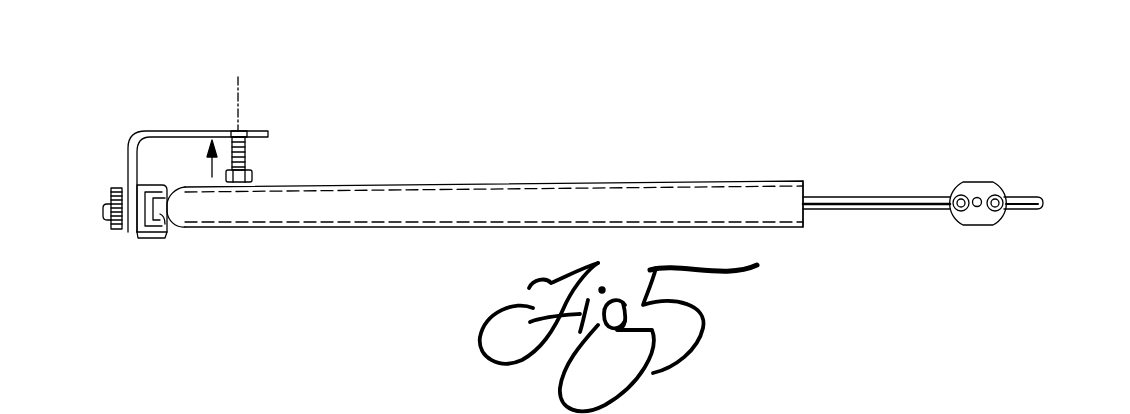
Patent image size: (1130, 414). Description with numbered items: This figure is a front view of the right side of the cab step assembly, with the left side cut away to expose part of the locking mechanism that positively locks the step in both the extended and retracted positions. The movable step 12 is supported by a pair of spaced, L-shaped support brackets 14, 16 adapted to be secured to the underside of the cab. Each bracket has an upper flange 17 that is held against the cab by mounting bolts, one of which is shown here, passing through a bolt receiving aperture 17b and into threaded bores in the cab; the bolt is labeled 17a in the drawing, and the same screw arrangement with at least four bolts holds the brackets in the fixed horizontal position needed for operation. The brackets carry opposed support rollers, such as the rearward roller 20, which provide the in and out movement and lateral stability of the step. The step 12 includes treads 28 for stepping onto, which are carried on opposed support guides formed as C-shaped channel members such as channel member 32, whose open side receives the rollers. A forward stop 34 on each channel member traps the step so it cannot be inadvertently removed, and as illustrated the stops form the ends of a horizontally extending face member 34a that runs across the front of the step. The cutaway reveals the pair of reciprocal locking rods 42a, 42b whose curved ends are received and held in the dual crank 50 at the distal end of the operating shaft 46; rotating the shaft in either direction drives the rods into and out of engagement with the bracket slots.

The movable step 12 is at (405, 183).
The support bracket 14 is at (210, 410).
The support bracket 16 is at (1052, 409).
The upper flange 17 is at (133, 142).
The threaded fastener 17a is at (268, 134).
The bolt receiving aperture 17b is at (238, 133).
The rearward roller 20 is at (133, 232).
The tread 28 is at (623, 182).
The C-shaped channel member 32 is at (148, 238).
The forward stop 34 is at (157, 226).
The face member 34a is at (382, 215).
The locking rod 42a is at (883, 200).
The locking rod 42b is at (1032, 197).
The operating shaft 46 is at (978, 199).
The dual crank 50 is at (976, 226).